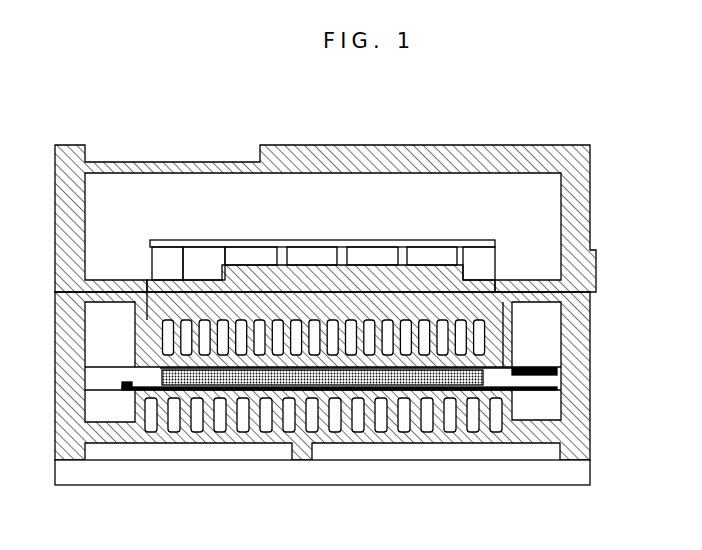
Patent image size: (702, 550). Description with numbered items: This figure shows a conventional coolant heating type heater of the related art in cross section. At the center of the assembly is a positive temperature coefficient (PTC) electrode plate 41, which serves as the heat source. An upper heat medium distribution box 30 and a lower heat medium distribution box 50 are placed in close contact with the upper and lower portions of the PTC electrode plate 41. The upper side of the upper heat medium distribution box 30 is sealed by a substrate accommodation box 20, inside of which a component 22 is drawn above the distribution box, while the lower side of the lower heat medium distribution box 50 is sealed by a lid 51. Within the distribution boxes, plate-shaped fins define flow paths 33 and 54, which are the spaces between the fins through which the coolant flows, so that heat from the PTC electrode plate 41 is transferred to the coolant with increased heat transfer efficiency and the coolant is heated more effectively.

The substrate accommodation box 20 is at (583, 210).
The circuit board 22 is at (313, 243).
The upper heat medium distribution box 30 is at (578, 330).
The flow path 33 is at (508, 337).
The positive temperature coefficient (PTC) electrode plate 41 is at (312, 390).
The lower heat medium distribution box 50 is at (583, 405).
The lid 51 is at (542, 445).
The flow path 54 is at (470, 425).